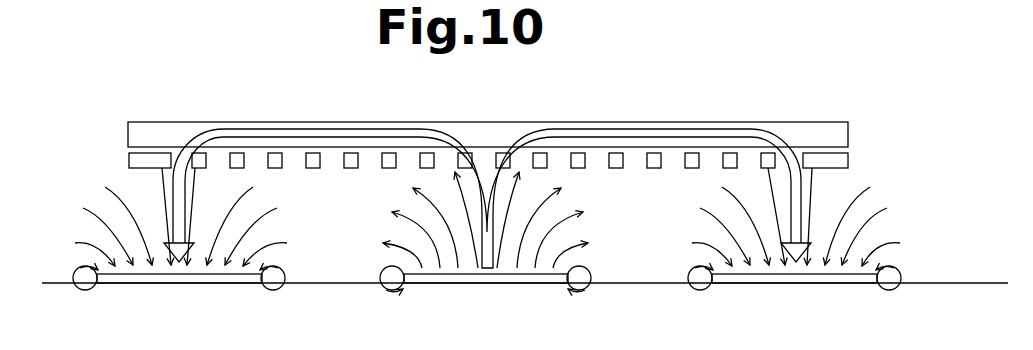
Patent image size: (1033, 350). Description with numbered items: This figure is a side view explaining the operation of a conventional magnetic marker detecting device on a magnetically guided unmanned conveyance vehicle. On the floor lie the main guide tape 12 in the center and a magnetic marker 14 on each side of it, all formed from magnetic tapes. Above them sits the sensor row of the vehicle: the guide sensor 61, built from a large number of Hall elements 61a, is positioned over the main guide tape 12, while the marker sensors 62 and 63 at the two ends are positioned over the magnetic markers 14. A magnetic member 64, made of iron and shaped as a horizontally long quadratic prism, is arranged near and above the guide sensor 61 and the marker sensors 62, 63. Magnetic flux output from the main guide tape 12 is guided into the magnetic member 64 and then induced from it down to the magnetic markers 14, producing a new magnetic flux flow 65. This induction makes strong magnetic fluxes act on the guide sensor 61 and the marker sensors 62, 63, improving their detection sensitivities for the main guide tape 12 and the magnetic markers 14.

The main guide tape 12 is at (445, 287).
The magnetic marker 14 is at (137, 287).
The guide sensor 61 is at (657, 174).
The Hall element 61a is at (387, 168).
The marker sensor 62 is at (140, 168).
The marker sensor 63 is at (838, 168).
The magnetic member 64 is at (808, 122).
The magnetic flux flow 65 is at (392, 129).